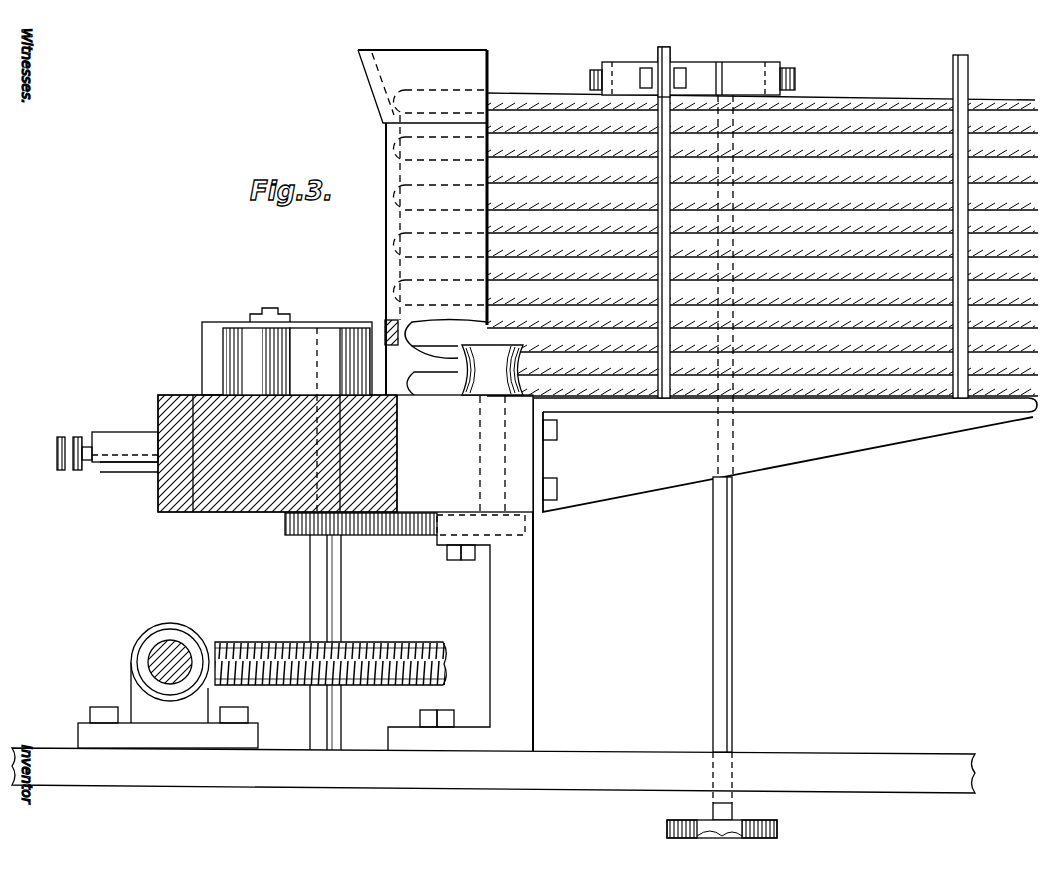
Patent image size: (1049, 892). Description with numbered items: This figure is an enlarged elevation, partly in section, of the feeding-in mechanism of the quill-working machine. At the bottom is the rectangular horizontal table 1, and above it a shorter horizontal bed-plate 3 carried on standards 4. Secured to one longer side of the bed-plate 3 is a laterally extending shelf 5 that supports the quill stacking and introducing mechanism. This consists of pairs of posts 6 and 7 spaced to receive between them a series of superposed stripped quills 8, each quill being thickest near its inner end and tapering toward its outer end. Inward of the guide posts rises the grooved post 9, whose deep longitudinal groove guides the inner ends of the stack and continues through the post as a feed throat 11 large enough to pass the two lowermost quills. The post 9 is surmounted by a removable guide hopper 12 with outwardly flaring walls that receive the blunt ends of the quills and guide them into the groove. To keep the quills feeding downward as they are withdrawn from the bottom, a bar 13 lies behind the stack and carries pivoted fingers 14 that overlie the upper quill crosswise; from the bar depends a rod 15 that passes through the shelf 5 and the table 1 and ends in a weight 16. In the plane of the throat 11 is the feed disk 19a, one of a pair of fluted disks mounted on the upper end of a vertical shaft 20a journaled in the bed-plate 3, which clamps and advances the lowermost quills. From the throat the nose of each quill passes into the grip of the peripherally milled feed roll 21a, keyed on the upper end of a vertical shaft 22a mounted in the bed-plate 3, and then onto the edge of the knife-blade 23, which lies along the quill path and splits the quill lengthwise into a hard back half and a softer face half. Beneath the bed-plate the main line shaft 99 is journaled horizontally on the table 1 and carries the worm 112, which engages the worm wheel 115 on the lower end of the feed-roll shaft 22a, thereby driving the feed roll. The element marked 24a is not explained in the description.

The table 1 is at (493, 770).
The bed-plate 3 is at (345, 453).
The standards 4 is at (520, 603).
The shelf 5 is at (630, 412).
The post 6 is at (672, 53).
The post 7 is at (968, 88).
The stripped quills 8 is at (829, 104).
The grooved post 9 is at (385, 236).
The feed throat 11 is at (385, 336).
The guide hopper 12 is at (373, 84).
The bar 13 is at (691, 262).
The pivoted fingers 14 is at (590, 80).
The depending rod 15 is at (731, 592).
The weight 16 is at (777, 830).
The feed disk 19a is at (492, 370).
The shaft 20a is at (480, 478).
The feed roll 21a is at (344, 328).
The vertical shaft 22a is at (320, 577).
The knife-blade 23 is at (288, 322).
The cylinder 24a is at (242, 337).
The main line shaft 99 is at (160, 655).
The worm 112 is at (137, 650).
The worm wheel 115 is at (389, 649).